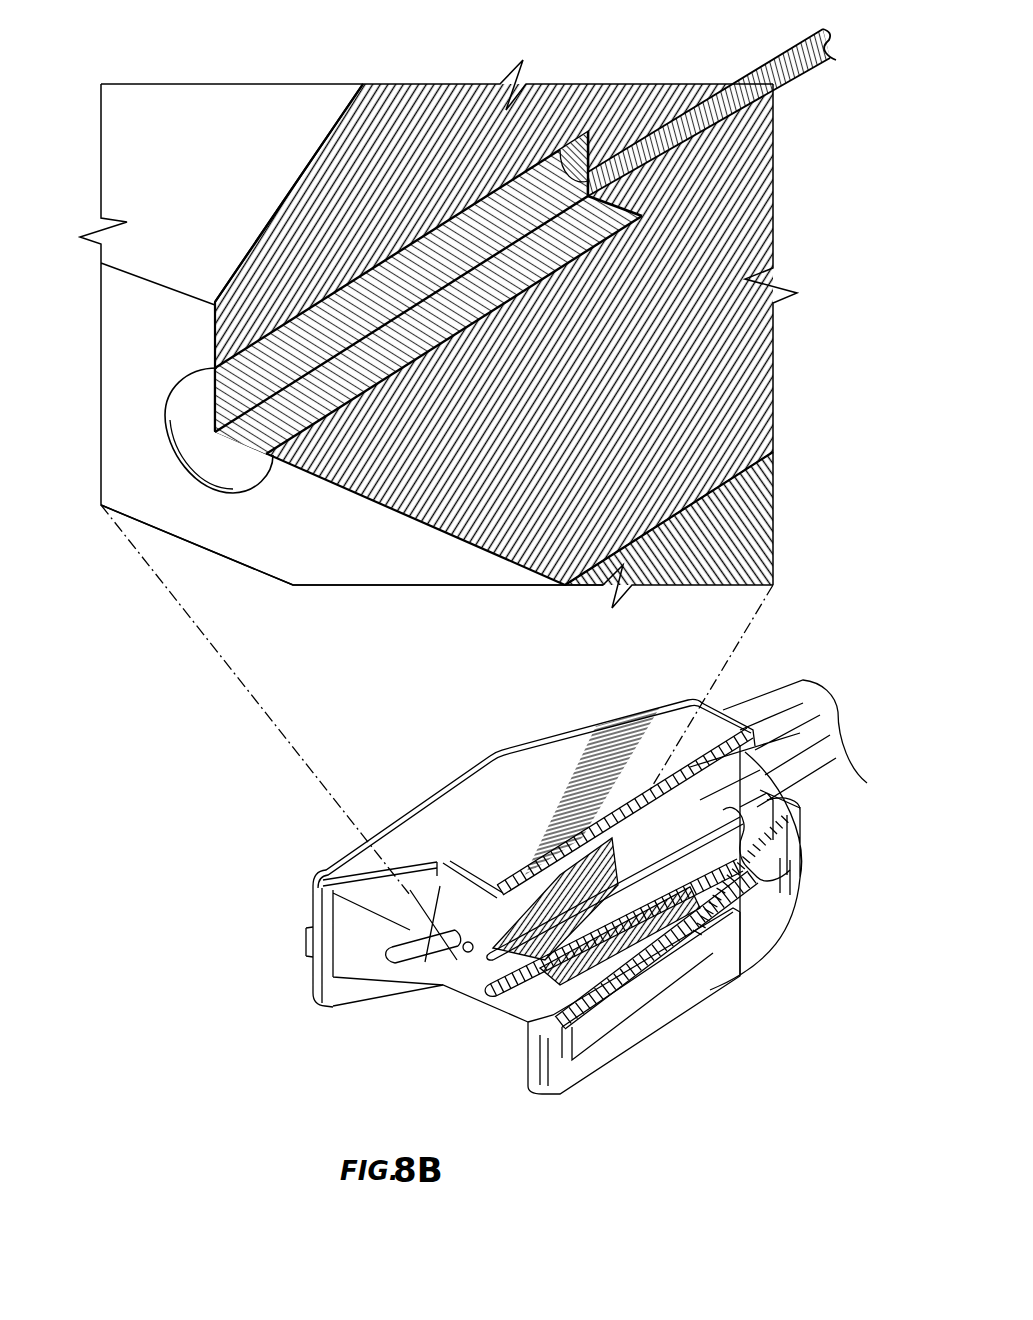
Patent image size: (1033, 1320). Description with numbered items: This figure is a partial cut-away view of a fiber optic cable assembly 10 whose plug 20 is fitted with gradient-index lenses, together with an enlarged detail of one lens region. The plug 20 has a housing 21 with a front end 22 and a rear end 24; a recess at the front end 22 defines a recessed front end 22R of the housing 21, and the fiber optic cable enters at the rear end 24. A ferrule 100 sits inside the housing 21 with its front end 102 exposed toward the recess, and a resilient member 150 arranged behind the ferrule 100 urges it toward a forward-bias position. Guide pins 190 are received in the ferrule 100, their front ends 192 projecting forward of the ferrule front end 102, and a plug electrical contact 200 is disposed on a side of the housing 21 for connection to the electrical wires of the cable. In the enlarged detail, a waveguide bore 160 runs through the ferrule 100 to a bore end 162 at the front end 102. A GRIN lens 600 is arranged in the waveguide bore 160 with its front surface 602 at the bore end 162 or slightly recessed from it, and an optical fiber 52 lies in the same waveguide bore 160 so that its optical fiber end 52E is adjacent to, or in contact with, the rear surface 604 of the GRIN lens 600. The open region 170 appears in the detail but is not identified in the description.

The fiber optic cable assembly 10 is at (302, 822).
The fiber optic interface device 20 is at (511, 735).
The housing 21 is at (402, 108).
The front end 22 is at (313, 943).
The recessed front end 22R is at (482, 1008).
The rear end 24 is at (697, 730).
The optical fiber 52 is at (780, 82).
The optical fiber end 52E is at (560, 150).
The ferrule 100 is at (690, 401).
The front end 102 is at (385, 540).
The resilient member 150 is at (737, 873).
The waveguide bore 160 is at (700, 142).
The bore end 162 is at (165, 411).
The cavity 170 is at (190, 122).
The guide pin 190 is at (737, 528).
The front end 192 is at (390, 957).
The plug electrical contact 200 is at (632, 1007).
The gradient-index (GRIN) lens 600 is at (570, 268).
The front surface 602 is at (230, 453).
The rear surface 604 is at (637, 202).